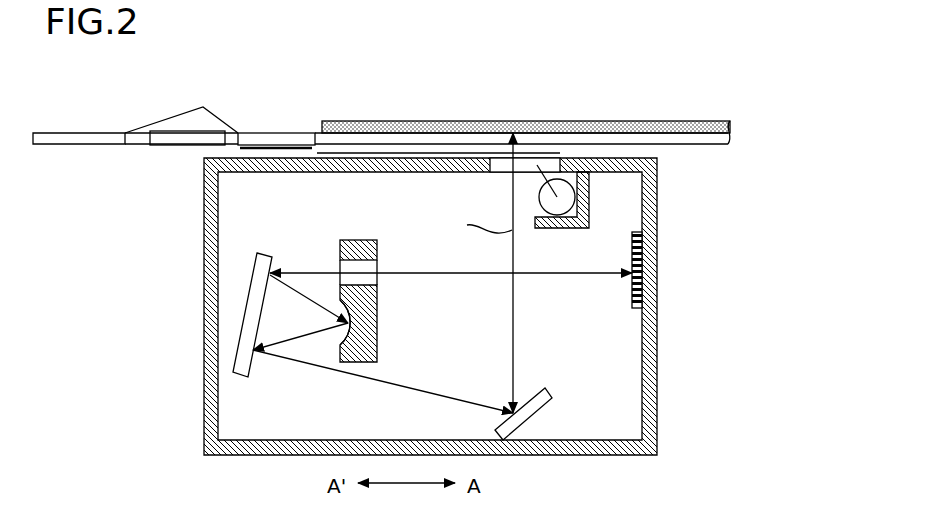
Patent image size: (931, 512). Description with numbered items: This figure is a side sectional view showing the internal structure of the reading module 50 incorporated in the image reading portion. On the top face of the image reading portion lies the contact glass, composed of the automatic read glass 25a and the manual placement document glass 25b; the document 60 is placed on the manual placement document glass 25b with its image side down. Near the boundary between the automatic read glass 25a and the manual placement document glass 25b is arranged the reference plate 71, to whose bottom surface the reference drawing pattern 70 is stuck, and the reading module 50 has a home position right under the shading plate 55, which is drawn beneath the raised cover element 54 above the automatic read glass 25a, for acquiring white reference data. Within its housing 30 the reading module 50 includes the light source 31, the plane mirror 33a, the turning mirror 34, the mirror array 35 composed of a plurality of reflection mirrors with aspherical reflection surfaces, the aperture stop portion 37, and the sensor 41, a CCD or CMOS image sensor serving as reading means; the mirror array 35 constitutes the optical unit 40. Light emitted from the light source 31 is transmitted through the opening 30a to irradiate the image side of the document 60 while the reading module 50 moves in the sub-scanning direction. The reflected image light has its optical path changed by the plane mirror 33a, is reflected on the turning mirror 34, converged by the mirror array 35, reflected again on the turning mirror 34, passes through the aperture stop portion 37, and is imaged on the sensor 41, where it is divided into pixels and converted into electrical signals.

The automatic read glass 25a is at (80, 133).
The manual placement document glass 25b is at (383, 138).
The cover 54 is at (160, 122).
The shading plate 55 is at (167, 144).
The reference drawing pattern 70 is at (263, 140).
The reference plate 71 is at (293, 137).
The document 60 is at (665, 128).
The reading module 50 is at (453, 280).
The housing 30 is at (657, 385).
The opening 30a is at (505, 160).
The light source 31 is at (560, 206).
The sensor 41 is at (632, 302).
The optical unit 40 is at (356, 301).
The aperture stop portion 37 is at (377, 280).
The mirror array 35 is at (337, 297).
The turning mirror 34 is at (245, 322).
The plane mirror 33a is at (520, 420).